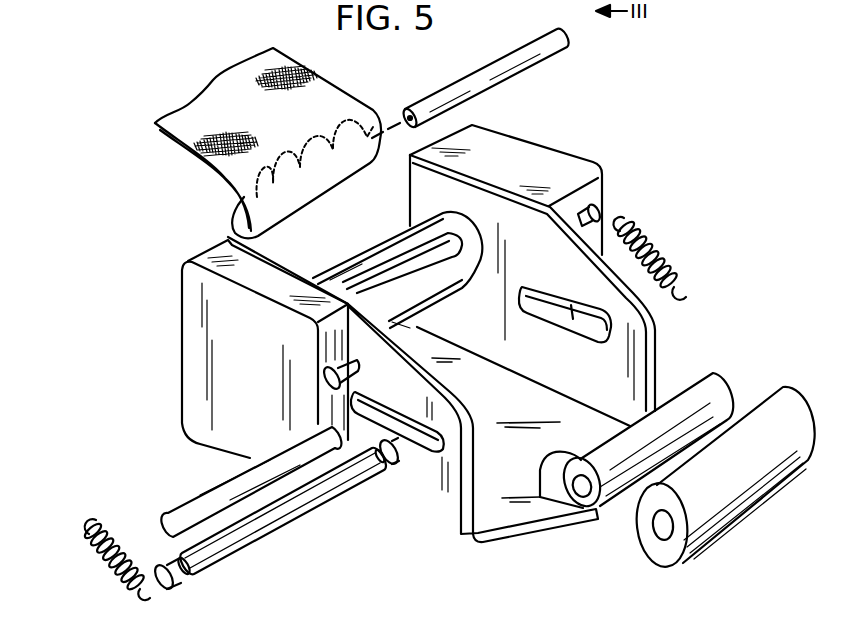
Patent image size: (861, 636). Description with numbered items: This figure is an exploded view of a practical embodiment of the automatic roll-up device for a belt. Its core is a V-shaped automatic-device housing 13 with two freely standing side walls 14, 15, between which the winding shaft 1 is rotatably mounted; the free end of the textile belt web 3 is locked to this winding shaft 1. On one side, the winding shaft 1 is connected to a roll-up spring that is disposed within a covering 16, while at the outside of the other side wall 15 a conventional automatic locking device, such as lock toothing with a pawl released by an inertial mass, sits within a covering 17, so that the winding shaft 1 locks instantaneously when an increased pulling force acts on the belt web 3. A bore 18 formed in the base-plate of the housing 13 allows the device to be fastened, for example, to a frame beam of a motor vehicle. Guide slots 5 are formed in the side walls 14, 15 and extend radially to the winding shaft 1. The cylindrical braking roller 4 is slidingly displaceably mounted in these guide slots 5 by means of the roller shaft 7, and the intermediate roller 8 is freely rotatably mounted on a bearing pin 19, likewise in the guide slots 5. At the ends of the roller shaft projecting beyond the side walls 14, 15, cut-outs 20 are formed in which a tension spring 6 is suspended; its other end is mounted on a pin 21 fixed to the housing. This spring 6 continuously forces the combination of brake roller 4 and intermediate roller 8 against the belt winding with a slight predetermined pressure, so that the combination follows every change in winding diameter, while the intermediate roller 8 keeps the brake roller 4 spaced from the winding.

The winding shaft 1 is at (364, 259).
The belt web 3 is at (327, 93).
The braking roller 4 is at (727, 500).
The guide slot 5 is at (600, 309).
The tension spring 6 is at (654, 264).
The roller shaft 7 is at (252, 530).
The intermediate roller 8 is at (722, 402).
The automatic-device housing 13 is at (502, 548).
The side wall 14 is at (420, 508).
The side wall 15 is at (640, 359).
The covering 16 is at (192, 333).
The covering 17 is at (527, 179).
The bore 18 is at (552, 478).
The bearing pin 19 is at (193, 502).
The cut-outs 20 is at (178, 578).
The pin 21 is at (606, 210).